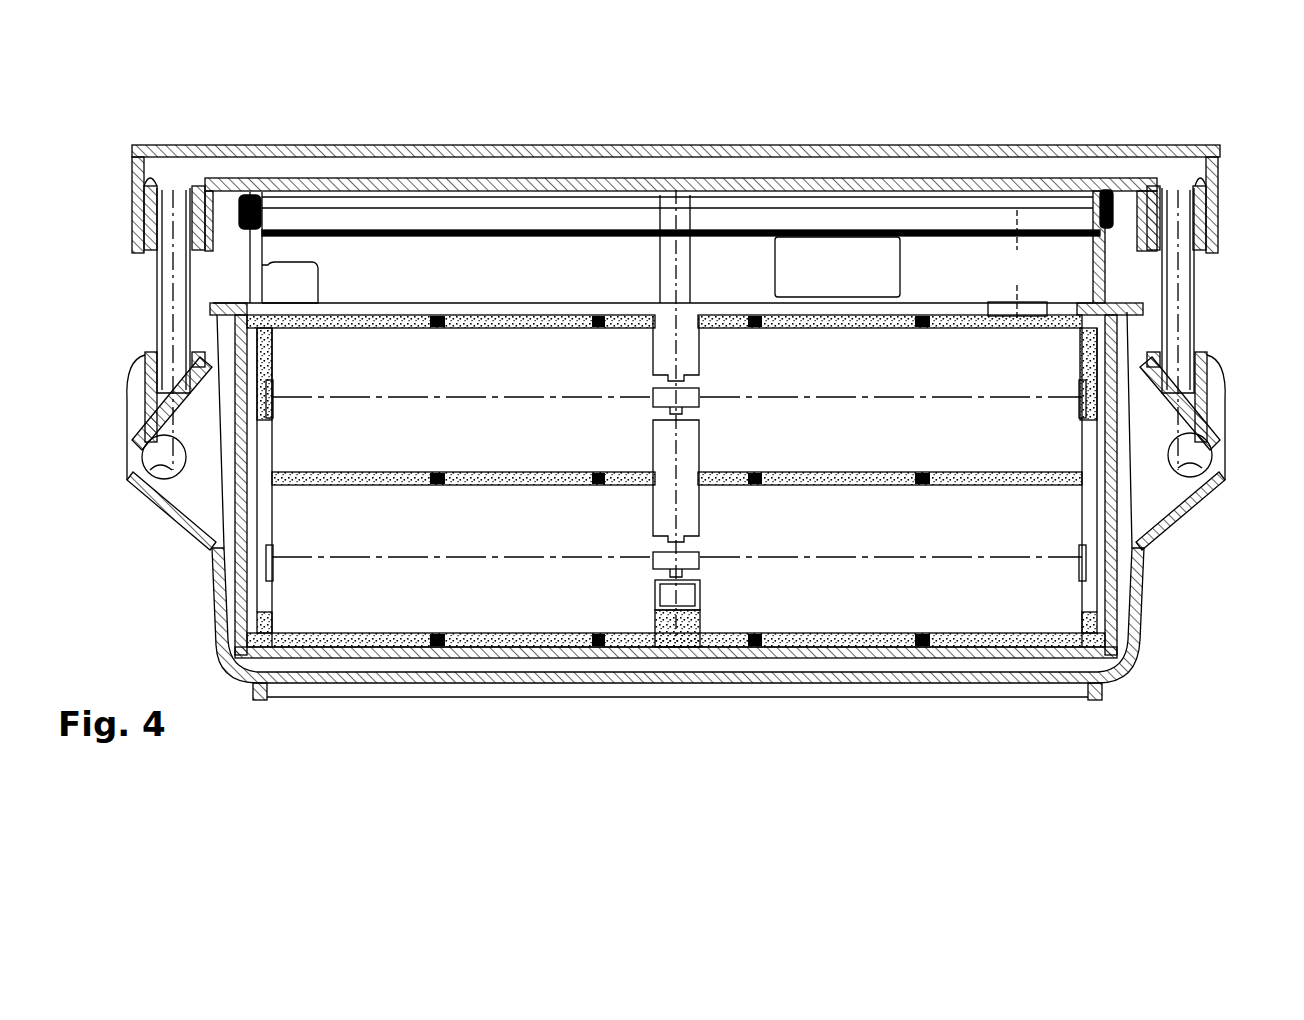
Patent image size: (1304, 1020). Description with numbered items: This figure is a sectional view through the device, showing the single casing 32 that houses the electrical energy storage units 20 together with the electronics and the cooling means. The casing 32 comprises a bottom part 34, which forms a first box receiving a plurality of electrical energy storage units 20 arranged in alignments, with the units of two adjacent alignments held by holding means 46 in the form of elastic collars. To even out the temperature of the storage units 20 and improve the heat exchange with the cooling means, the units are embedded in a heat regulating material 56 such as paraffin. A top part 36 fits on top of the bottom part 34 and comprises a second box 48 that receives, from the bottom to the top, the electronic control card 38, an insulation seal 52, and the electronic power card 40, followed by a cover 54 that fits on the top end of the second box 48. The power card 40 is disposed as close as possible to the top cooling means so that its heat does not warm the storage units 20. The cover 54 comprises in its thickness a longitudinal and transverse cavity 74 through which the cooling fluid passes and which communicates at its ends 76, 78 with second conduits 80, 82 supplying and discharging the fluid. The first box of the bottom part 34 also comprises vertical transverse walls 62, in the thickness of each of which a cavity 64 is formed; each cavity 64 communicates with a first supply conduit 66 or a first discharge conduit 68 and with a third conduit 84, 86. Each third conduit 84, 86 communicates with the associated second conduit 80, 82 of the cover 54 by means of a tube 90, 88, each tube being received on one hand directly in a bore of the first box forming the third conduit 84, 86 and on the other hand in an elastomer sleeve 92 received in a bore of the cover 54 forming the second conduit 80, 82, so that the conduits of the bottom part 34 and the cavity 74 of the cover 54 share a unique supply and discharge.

The electrical energy storage unit 20 is at (676, 481).
The casing 32 is at (1148, 586).
The bottom part 34 is at (805, 702).
The top part 36 is at (872, 140).
The electronic control card 38 is at (433, 228).
The electronic power card 40 is at (352, 186).
The holding means 46 is at (408, 656).
The second box 48 is at (262, 252).
The insulation seal 52 is at (236, 190).
The cover 54 is at (708, 150).
The heat regulating material 56 is at (1104, 660).
The vertical transverse wall 62 is at (222, 624).
The cavity 64 is at (215, 494).
The first supply conduit 66 is at (152, 465).
The first discharge conduit 68 is at (1197, 462).
The longitudinal and transverse cavity 74 is at (595, 164).
The end of cavity 76 is at (160, 166).
The end of cavity 78 is at (1212, 165).
The second conduit 80 is at (148, 186).
The second conduit 82 is at (1198, 173).
The third conduit 84 is at (160, 365).
The third conduit 86 is at (1165, 348).
The tube 88 is at (157, 330).
The tube 90 is at (1194, 306).
The sleeve 92 is at (144, 212).